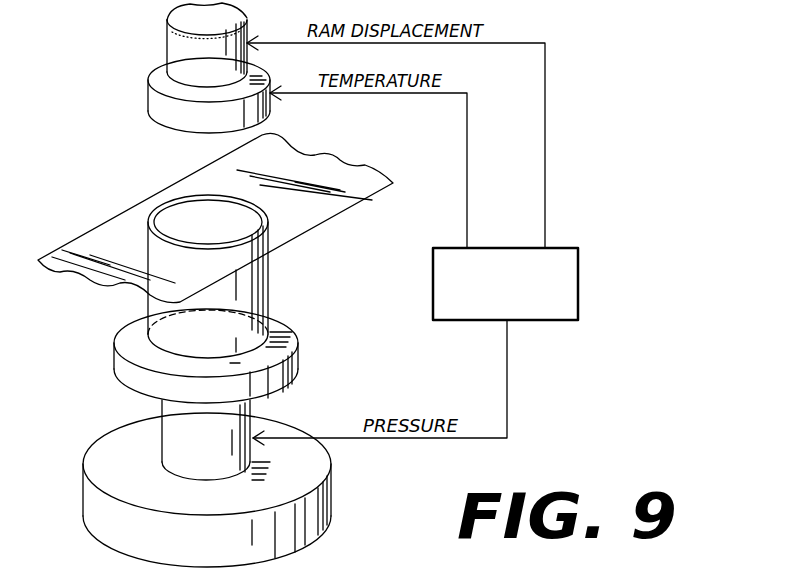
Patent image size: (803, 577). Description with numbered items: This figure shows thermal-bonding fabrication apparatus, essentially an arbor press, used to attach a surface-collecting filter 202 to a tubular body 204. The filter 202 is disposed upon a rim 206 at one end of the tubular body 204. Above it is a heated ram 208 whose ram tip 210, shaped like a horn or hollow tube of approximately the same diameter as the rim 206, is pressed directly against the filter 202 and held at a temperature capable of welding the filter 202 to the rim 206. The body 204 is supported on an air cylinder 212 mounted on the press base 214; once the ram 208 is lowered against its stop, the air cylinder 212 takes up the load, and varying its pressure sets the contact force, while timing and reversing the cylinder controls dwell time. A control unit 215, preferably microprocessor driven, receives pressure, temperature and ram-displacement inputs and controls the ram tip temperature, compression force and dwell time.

The surface-collecting filter 202 is at (323, 167).
The tubular body 204 is at (255, 283).
The rim 206 is at (150, 222).
The heated ram 208 is at (162, 103).
The ram tip 210 is at (183, 47).
The air cylinder 212 is at (297, 365).
The press base 214 is at (323, 500).
The control unit 215 is at (578, 282).